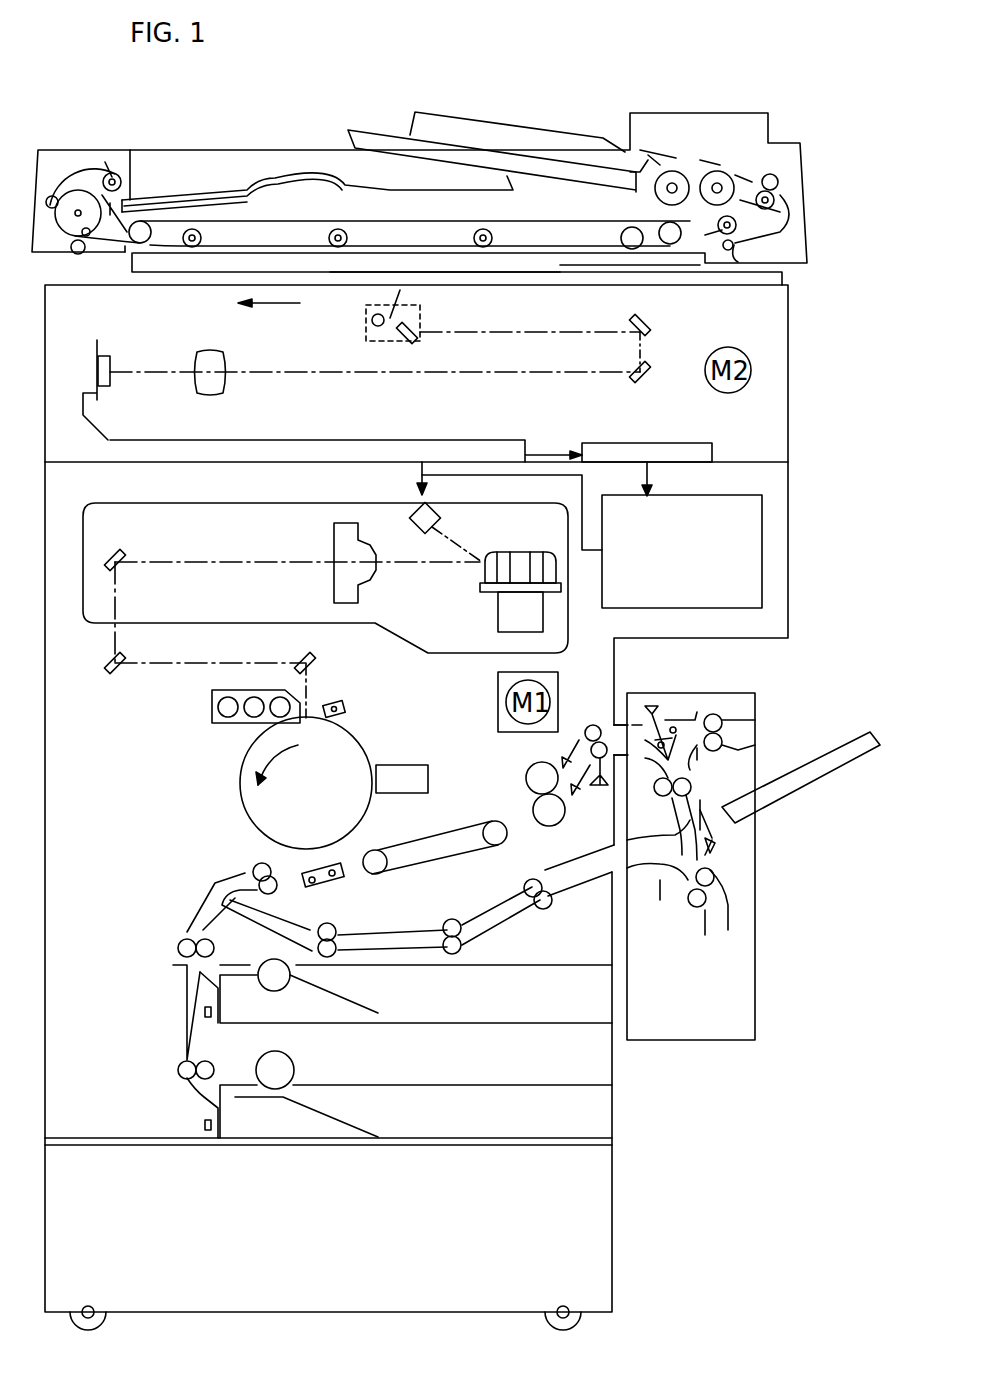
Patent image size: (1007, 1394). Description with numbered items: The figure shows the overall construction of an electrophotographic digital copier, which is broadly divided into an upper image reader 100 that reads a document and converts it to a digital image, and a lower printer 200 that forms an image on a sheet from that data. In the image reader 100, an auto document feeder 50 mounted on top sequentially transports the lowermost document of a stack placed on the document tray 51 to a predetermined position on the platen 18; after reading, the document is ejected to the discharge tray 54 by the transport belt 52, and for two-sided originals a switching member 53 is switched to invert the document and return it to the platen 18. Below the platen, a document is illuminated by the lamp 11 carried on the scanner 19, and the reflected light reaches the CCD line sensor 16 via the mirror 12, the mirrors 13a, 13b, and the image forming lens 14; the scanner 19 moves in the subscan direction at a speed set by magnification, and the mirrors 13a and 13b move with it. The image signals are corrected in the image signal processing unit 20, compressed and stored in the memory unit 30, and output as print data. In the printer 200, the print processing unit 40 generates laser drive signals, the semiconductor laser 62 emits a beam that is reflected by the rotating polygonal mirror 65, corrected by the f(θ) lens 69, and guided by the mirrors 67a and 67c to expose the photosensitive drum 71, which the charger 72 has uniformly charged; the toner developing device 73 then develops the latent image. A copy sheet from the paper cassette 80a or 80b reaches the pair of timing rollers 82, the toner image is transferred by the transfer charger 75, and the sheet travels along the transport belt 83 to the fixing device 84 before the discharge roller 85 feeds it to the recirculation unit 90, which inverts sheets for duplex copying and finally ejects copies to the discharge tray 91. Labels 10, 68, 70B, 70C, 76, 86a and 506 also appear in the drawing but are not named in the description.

The image reading section 10 is at (324, 359).
The lamp 11 is at (366, 315).
The mirror 12 is at (418, 340).
The mirror 13a is at (650, 322).
The mirror 13b is at (652, 378).
The image forming lens 14 is at (205, 388).
The CCD line sensor 16 is at (110, 355).
The platen 18 is at (519, 272).
The scanner 19 is at (425, 315).
The image signal processing unit 20 is at (418, 440).
The memory unit 30 is at (612, 443).
The print processing unit 40 is at (755, 540).
The auto document feeder 50 is at (253, 150).
The document tray 51 is at (490, 145).
The transport belt 52 is at (380, 222).
The switching member 53 is at (122, 190).
The discharge tray 54 is at (188, 206).
The semiconductor laser 62 is at (410, 525).
The polygonal mirror 65 is at (518, 568).
The mirror 67a is at (124, 552).
The mirror 67c is at (315, 660).
The mirror 68 is at (115, 672).
The f(θ) lens 69 is at (333, 594).
The paper conveying path 70B is at (445, 907).
The transfer position 70C is at (492, 810).
The photosensitive drum 71 is at (306, 783).
The charger 72 is at (344, 708).
The toner developing device 73 is at (212, 705).
The transfer charger 75 is at (345, 882).
The cleaning device 76 is at (418, 765).
The paper cassette 80a is at (560, 988).
The paper cassette 80b is at (474, 1100).
The timing rollers 82 is at (255, 866).
The transport belt 83 is at (422, 845).
The fixing device 84 is at (532, 810).
The discharge roller 85 is at (592, 726).
The conveying rollers 86a is at (524, 888).
The recirculation unit 90 is at (758, 922).
The discharge tray 91 is at (860, 735).
The image reader 100 is at (806, 400).
The printer 200 is at (798, 668).
The document reading glass 506 is at (576, 268).